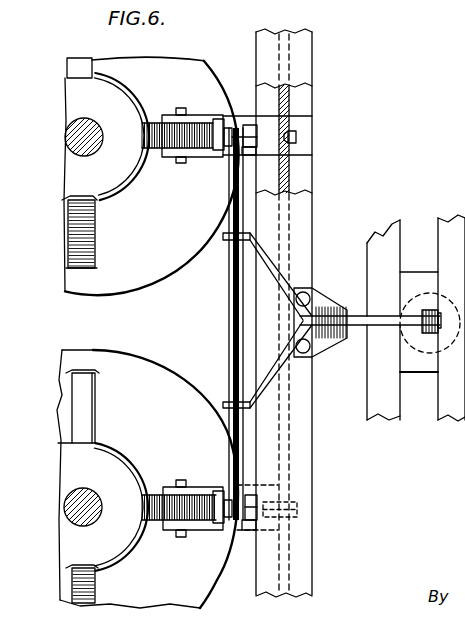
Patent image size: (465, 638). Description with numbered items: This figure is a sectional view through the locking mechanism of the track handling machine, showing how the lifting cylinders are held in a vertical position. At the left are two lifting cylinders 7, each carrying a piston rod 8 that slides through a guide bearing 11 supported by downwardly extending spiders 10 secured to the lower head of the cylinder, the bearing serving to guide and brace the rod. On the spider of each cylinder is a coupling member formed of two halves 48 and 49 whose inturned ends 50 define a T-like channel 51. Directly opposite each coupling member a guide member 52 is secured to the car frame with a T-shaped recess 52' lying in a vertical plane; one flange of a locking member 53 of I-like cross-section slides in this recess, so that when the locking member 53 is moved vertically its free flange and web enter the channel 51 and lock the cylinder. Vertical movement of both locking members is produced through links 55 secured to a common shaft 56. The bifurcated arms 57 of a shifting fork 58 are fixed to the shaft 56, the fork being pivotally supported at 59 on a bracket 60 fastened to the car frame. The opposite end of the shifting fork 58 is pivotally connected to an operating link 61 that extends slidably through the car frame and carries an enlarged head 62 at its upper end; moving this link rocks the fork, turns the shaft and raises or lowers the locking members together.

The lifting cylinder 7 is at (92, 294).
The piston rod 8 is at (68, 134).
The spider 10 is at (148, 124).
The guide bearing 11 is at (118, 179).
The coupling member half 48 is at (201, 114).
The coupling member half 49 is at (198, 160).
The inturned end 50 is at (224, 157).
The T-like channel 51 is at (216, 122).
The guide member 52 is at (278, 343).
The T-shaped recess 52' is at (297, 324).
The locking member 53 is at (255, 157).
The link 55 is at (245, 124).
The common shaft 56 is at (229, 312).
The bifurcated arms 57 is at (267, 365).
The shifting fork 58 is at (350, 308).
The pivot 59 is at (323, 300).
The bracket 60 is at (326, 346).
The operating link 61 is at (426, 314).
The enlarged head 62 is at (418, 295).